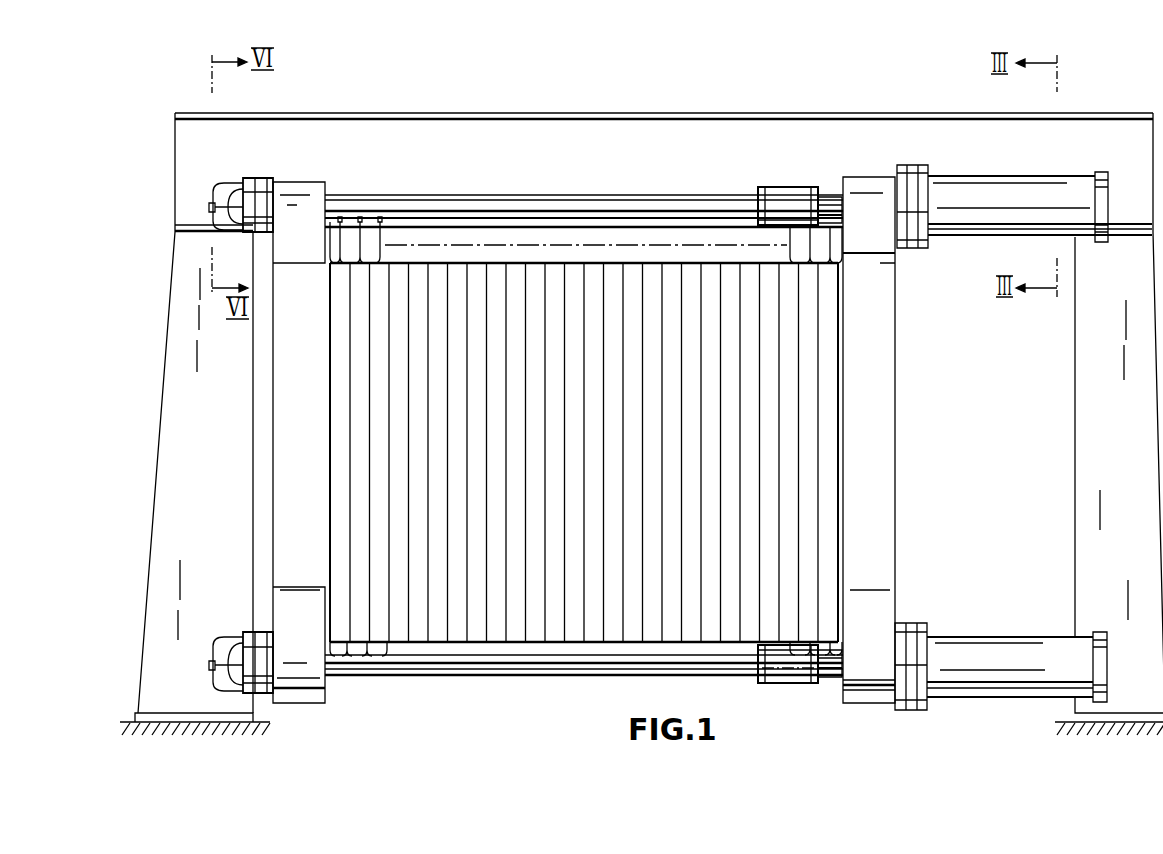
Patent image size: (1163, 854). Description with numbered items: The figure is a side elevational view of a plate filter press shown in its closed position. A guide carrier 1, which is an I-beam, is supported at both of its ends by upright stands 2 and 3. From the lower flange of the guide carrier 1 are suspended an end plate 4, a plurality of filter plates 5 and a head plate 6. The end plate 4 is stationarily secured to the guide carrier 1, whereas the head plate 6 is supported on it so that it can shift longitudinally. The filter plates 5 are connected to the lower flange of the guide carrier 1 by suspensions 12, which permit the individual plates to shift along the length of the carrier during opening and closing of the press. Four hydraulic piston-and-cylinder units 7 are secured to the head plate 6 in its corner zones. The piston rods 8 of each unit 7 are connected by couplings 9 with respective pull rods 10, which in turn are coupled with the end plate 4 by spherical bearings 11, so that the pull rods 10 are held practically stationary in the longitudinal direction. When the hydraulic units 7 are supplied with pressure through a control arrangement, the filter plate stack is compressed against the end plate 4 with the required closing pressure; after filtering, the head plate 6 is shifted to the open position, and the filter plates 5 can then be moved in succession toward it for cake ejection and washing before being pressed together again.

The guide carrier 1 is at (663, 156).
The upright stand 2 is at (183, 257).
The upright stand 3 is at (1088, 356).
The end plate 4 is at (283, 388).
The filter plates 5 is at (415, 641).
The head plate 6 is at (885, 404).
The hydraulic piston-and-cylinder unit 7 is at (968, 230).
The piston rod 8 is at (830, 203).
The coupling 9 is at (792, 198).
The pull rod 10 is at (573, 203).
The spherical bearing 11 is at (259, 167).
The suspension 12 is at (382, 238).